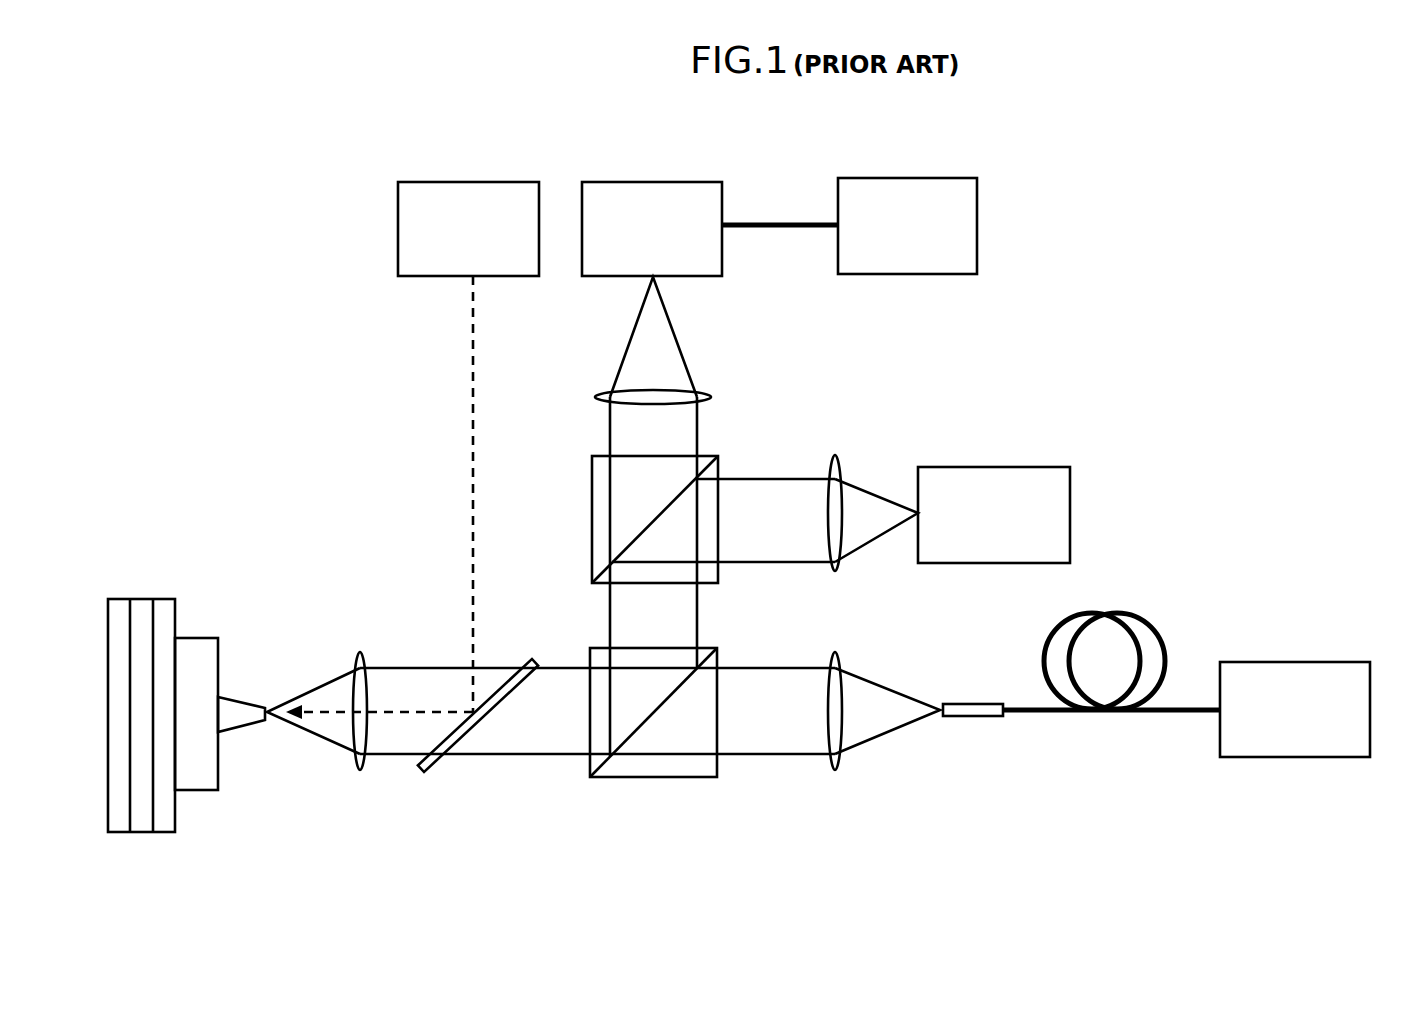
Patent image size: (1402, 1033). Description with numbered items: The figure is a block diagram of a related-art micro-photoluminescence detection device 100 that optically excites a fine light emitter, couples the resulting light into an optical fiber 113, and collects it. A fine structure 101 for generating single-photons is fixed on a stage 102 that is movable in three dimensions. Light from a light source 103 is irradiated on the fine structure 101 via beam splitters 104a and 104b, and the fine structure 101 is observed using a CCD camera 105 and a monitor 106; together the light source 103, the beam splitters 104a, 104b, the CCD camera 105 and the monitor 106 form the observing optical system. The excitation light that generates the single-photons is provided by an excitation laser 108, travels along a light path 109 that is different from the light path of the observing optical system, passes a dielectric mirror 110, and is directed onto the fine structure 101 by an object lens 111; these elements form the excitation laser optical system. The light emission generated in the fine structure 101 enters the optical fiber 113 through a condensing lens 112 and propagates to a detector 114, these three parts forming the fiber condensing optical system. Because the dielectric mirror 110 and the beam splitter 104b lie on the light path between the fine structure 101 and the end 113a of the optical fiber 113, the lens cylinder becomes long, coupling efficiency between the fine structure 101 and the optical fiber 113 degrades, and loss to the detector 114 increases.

The micro-photoluminescence detection device 100 is at (183, 133).
The fine structure 101 is at (250, 630).
The stage 102 is at (175, 586).
The light source 103 is at (1010, 467).
The beam splitter 104a is at (718, 583).
The beam splitter 104b is at (648, 777).
The CCD camera 105 is at (652, 182).
The monitor 106 is at (890, 178).
The excitation laser 108 is at (468, 182).
The light path 109 is at (470, 432).
The dielectric mirror 110 is at (477, 727).
The object lens 111 is at (360, 770).
The condensing lens 112 is at (835, 770).
The optical fiber 113 is at (970, 716).
The end of the optical fiber 113a is at (939, 721).
The detector 114 is at (1300, 662).